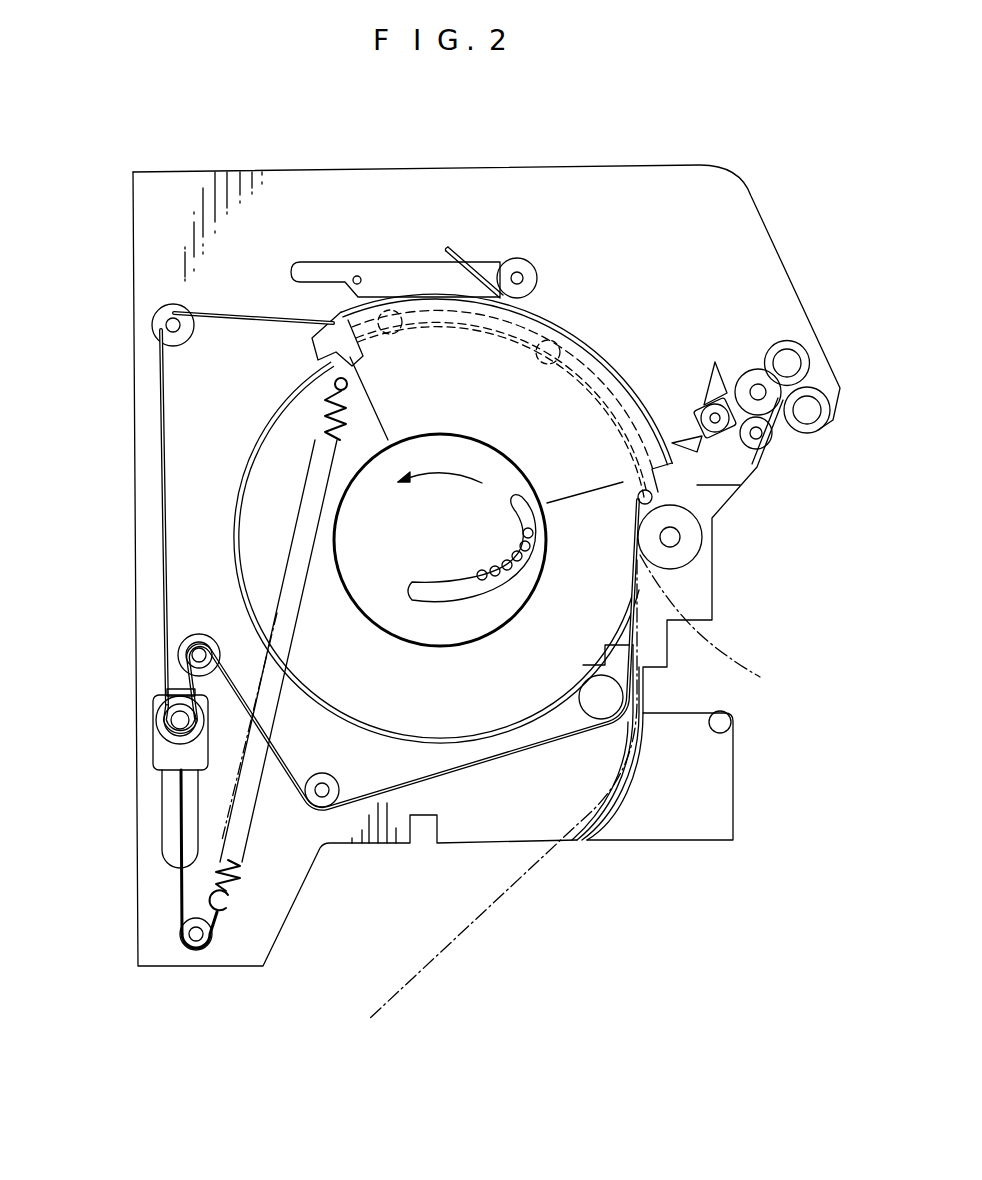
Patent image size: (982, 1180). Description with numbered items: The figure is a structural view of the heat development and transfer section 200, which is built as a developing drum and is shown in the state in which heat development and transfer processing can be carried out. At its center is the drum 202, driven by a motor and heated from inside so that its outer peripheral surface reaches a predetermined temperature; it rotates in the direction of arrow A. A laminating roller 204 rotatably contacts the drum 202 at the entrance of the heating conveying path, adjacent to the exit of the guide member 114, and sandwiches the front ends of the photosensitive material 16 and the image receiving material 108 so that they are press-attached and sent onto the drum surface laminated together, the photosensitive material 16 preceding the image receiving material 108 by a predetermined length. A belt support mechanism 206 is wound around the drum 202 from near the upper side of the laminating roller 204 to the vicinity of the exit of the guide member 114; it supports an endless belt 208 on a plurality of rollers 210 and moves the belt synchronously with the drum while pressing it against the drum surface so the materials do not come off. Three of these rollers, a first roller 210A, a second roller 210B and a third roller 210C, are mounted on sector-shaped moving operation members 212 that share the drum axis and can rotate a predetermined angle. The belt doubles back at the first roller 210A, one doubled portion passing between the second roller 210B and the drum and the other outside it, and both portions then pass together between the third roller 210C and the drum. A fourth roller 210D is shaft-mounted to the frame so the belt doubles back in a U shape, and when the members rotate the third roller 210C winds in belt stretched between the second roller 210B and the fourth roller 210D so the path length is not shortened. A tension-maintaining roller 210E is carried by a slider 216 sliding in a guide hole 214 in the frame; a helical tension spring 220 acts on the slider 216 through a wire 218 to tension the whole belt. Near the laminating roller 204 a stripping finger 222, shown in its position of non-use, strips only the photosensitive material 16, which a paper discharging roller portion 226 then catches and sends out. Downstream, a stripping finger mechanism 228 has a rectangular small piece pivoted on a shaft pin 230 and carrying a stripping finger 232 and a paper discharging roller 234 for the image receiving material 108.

The photosensitive material 16 is at (748, 660).
The image receiving material 108 is at (497, 900).
The guide member 114 is at (623, 793).
The heat development and transfer section 200 is at (786, 188).
The drum 202 is at (478, 705).
The laminating roller 204 is at (688, 550).
The belt support mechanism 206 is at (157, 534).
The endless belt 208 is at (582, 372).
The rollers 210 is at (200, 650).
The first roller 210A is at (633, 507).
The second roller 210B is at (558, 343).
The third roller 210C is at (398, 338).
The fourth roller 210D is at (180, 333).
The tension-maintaining roller 210E is at (172, 724).
The moving operation members 212 is at (528, 326).
The guide hole 214 is at (170, 822).
The slider 216 is at (165, 747).
The wire 218 is at (180, 918).
The helical tension spring 220 is at (237, 882).
The stripping finger 222 is at (697, 447).
The paper discharging roller portion 226 is at (800, 432).
The stripping finger mechanism 228 is at (405, 262).
The shaft pin 230 is at (357, 276).
The stripping finger 232 is at (455, 245).
The paper discharging roller 234 is at (525, 262).